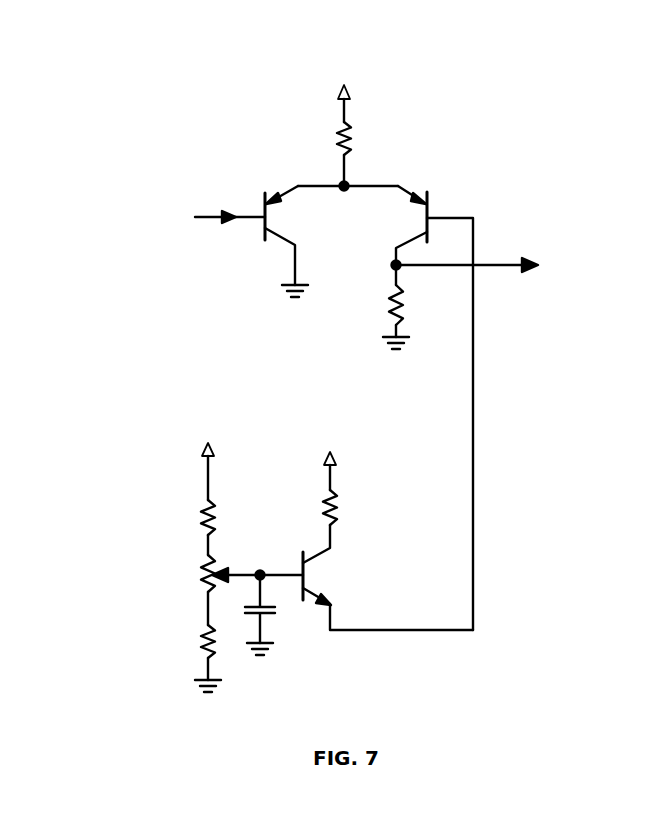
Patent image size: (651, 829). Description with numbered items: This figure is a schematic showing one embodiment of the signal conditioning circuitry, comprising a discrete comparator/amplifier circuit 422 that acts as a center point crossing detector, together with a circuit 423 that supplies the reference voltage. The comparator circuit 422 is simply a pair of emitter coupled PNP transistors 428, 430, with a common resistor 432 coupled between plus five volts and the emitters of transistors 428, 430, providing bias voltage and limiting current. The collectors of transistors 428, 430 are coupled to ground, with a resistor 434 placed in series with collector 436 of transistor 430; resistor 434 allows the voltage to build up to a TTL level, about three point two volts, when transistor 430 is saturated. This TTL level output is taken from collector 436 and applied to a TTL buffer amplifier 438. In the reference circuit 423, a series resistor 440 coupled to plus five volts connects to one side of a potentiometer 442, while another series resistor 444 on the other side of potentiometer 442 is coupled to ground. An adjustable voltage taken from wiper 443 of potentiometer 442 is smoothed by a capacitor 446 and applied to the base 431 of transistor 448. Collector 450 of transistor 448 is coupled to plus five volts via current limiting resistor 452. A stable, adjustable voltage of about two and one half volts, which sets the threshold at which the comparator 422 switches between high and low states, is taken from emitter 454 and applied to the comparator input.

The comparator/amplifier circuit 422 is at (282, 325).
The reference voltage source circuit 423 is at (395, 717).
The PNP transistor 428 is at (260, 202).
The PNP transistor 430 is at (429, 196).
The base of transistor 448 431 is at (292, 570).
The common resistor 432 is at (350, 137).
The resistor 434 is at (390, 305).
The collector of transistor 430 436 is at (408, 238).
The TTL buffer amplifier 438 is at (506, 267).
The series resistor 440 is at (200, 517).
The potentiometer 442 is at (200, 572).
The wiper 443 is at (228, 572).
The series resistor 444 is at (200, 643).
The capacitor 446 is at (270, 615).
The transistor 448 is at (310, 578).
The collector of transistor 448 450 is at (332, 548).
The current limiting resistor 452 is at (335, 500).
The emitter of transistor 448 454 is at (334, 604).